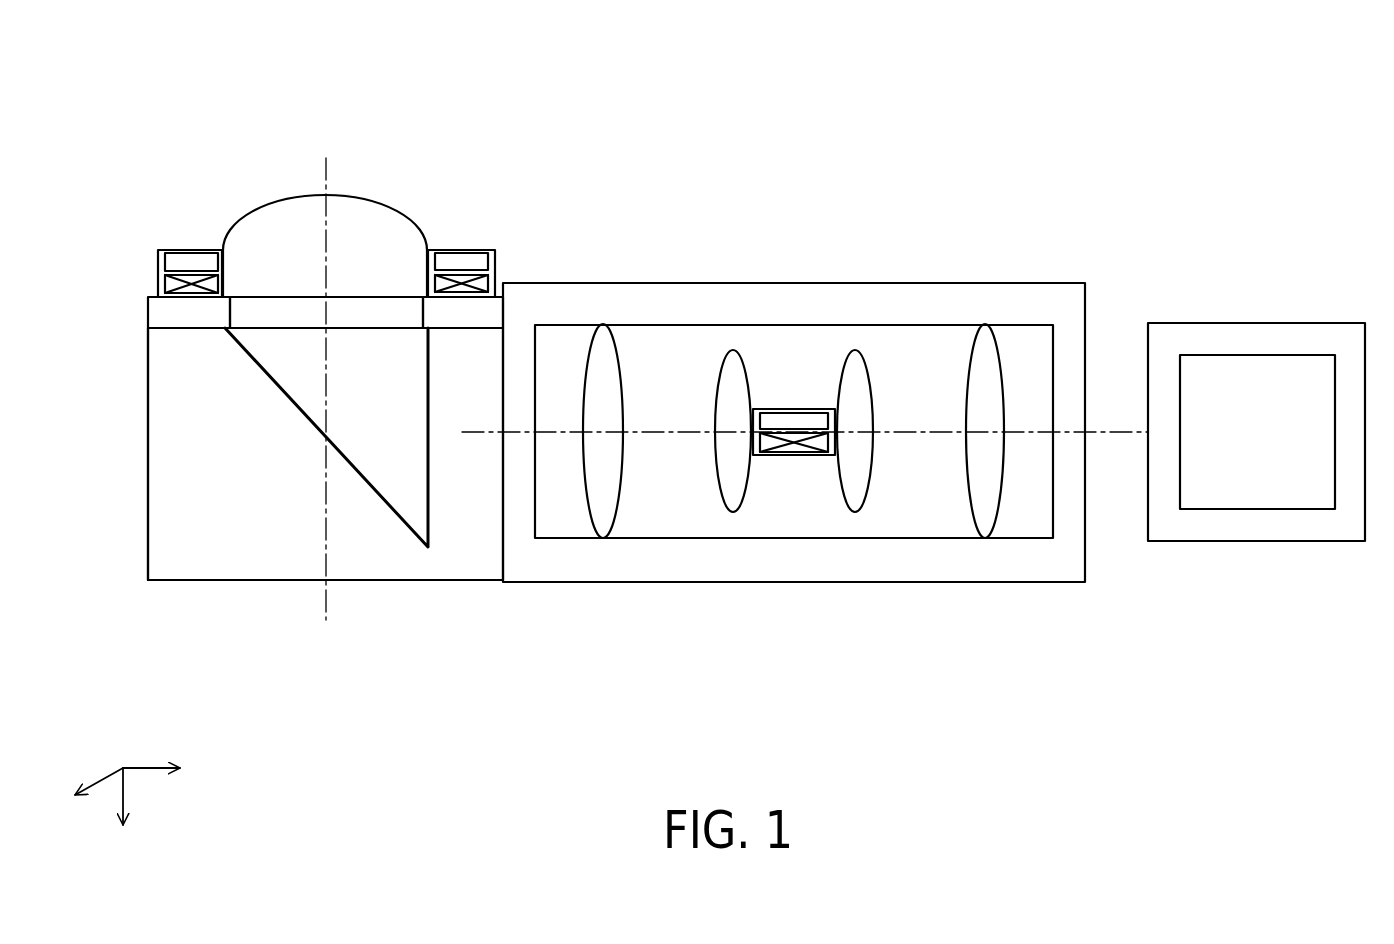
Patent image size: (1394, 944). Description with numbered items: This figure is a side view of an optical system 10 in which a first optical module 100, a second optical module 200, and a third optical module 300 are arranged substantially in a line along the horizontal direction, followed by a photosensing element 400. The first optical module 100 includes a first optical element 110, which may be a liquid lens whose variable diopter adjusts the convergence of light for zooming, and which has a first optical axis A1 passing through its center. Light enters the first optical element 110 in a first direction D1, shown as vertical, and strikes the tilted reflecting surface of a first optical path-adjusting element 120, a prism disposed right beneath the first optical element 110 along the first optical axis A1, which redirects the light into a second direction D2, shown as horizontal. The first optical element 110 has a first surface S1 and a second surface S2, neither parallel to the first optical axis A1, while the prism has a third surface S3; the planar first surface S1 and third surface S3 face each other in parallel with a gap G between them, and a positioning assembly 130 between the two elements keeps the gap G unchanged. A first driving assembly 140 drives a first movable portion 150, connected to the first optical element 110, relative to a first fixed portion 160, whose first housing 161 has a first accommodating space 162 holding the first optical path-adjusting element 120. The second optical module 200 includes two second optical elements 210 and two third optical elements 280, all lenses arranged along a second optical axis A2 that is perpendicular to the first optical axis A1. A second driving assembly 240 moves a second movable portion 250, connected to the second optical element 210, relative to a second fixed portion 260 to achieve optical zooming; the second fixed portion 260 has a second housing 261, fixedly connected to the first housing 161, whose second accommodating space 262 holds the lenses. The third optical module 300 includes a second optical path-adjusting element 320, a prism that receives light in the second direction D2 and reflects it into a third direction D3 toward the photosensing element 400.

The optical system 10 is at (107, 95).
The first optical module 100 is at (123, 353).
The first optical element 110 is at (278, 220).
The first optical path-adjusting element 120 is at (382, 447).
The positioning assembly 130 is at (160, 312).
The first driving assembly 140 is at (497, 267).
The first movable portion 150 is at (462, 260).
The first fixed portion 160 is at (148, 515).
The first housing 161 is at (465, 583).
The first accommodating space 162 is at (207, 553).
The second optical module 200 is at (923, 608).
The second optical element 210 is at (733, 500).
The second driving assembly 240 is at (798, 457).
The second movable portion 250 is at (795, 417).
The second fixed portion 260 is at (923, 283).
The second housing 261 is at (1042, 283).
The second accommodating space 262 is at (739, 325).
The third optical element 280 is at (606, 517).
The third optical module 300 is at (1353, 542).
The second optical path-adjusting element 320 is at (1287, 527).
The photosensing element 400 is at (1223, 510).
The first optical axis A1 is at (324, 371).
The second optical axis A2 is at (1122, 433).
The first surface S1 is at (358, 295).
The second surface S2 is at (353, 195).
The third surface S3 is at (278, 328).
The gap G is at (250, 317).
The first direction D1 is at (122, 817).
The second direction D2 is at (174, 767).
The third direction D3 is at (76, 792).